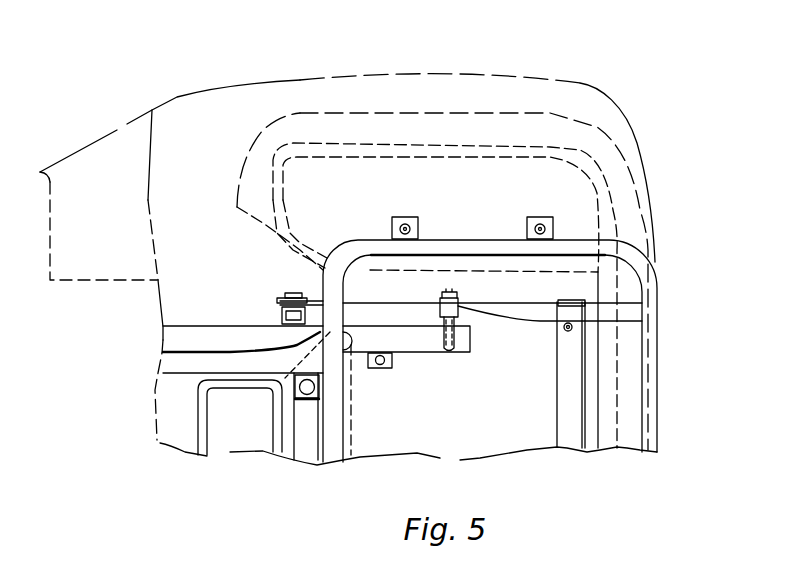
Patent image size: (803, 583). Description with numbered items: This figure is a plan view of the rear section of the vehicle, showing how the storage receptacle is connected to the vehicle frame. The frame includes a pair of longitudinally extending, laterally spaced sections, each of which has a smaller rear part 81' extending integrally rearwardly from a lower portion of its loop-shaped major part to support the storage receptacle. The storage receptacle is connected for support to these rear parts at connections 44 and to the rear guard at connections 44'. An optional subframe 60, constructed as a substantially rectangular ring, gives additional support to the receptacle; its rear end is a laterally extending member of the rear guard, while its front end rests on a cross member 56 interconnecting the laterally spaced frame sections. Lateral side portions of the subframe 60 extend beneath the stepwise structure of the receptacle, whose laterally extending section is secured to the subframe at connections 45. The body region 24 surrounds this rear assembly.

The vehicle cab body 24 is at (197, 128).
The subframe 60 is at (636, 250).
The connections 45 is at (403, 230).
The rear part 81' is at (459, 260).
The connections 44 is at (316, 379).
The connections 44' is at (539, 374).
The cross member 56 is at (302, 437).